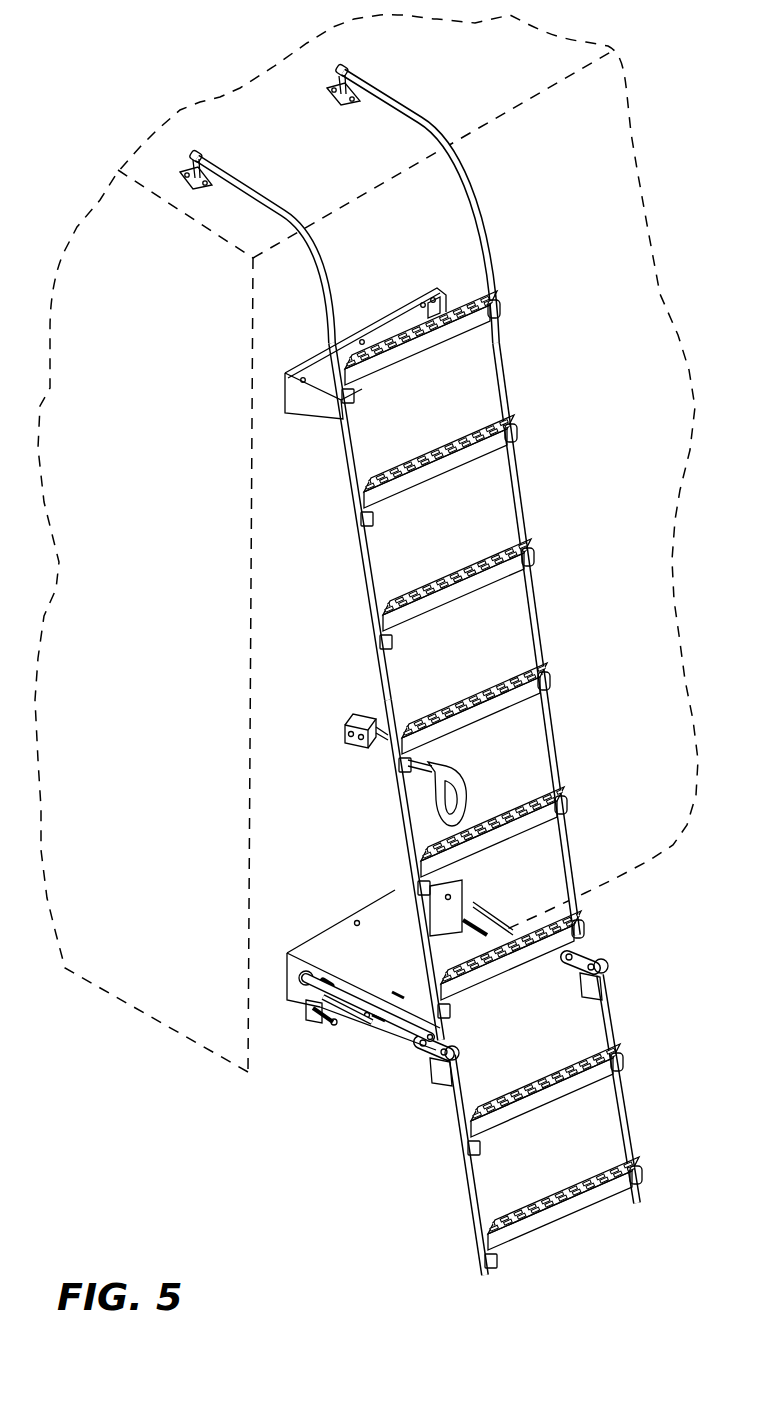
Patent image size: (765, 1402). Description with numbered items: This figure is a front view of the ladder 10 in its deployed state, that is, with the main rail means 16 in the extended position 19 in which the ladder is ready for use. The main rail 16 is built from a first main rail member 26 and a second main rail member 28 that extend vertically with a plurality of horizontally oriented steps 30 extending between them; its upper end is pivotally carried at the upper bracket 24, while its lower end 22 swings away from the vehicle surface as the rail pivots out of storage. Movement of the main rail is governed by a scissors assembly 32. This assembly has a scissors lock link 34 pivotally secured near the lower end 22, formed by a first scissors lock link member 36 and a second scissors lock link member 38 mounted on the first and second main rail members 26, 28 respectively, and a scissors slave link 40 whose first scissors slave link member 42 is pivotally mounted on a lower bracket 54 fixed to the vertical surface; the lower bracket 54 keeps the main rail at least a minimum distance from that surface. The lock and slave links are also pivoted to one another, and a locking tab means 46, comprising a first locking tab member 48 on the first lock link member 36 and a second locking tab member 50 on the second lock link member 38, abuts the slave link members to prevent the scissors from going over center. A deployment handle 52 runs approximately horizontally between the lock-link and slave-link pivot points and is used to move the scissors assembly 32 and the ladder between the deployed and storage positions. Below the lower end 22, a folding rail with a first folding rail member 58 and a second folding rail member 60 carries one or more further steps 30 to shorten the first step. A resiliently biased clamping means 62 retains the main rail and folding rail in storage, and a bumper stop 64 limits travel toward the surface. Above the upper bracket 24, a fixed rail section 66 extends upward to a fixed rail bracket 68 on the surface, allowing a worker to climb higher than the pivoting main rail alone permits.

The ladder 10 is at (436, 669).
The main rail means 16 is at (440, 691).
The extended position 19 is at (314, 1052).
The lower end 22 is at (402, 847).
The upper bracket 24 is at (288, 395).
The first main rail member 26 is at (365, 576).
The second main rail member 28 is at (520, 475).
The steps 30 is at (425, 357).
The scissors assembly 32 is at (347, 1017).
The scissors lock link 34 is at (407, 1035).
The first scissors lock link member 36 is at (378, 1023).
The second scissors lock link member 38 is at (560, 960).
The scissors slave link 40 is at (308, 975).
The first scissors slave link member 42 is at (347, 992).
The locking tab means 46 is at (303, 983).
The first locking tab member 48 is at (328, 977).
The second locking tab member 50 is at (478, 912).
The deployment handle 52 is at (397, 1000).
The lower bracket 54 is at (287, 989).
The first folding rail member 58 is at (470, 1196).
The second folding rail member 60 is at (628, 1121).
The resiliently biased clamping means 62 is at (377, 747).
The bumper stop 64 is at (317, 1030).
The fixed rail section 66 is at (420, 127).
The fixed rail bracket 68 is at (340, 92).